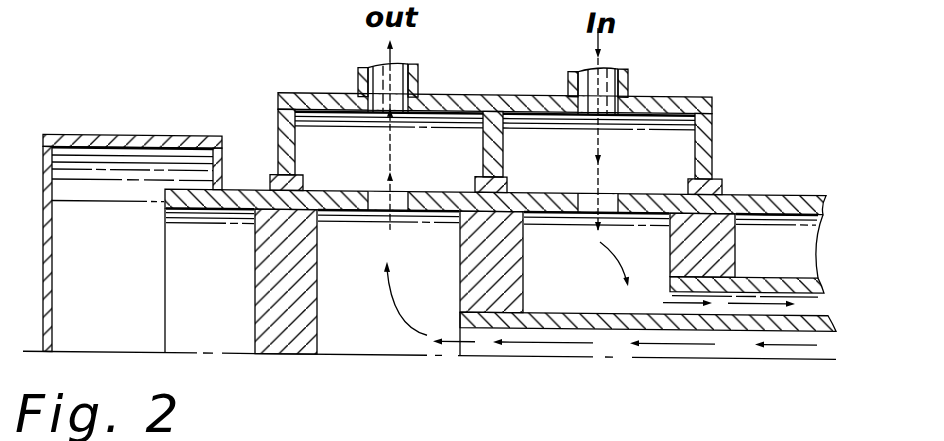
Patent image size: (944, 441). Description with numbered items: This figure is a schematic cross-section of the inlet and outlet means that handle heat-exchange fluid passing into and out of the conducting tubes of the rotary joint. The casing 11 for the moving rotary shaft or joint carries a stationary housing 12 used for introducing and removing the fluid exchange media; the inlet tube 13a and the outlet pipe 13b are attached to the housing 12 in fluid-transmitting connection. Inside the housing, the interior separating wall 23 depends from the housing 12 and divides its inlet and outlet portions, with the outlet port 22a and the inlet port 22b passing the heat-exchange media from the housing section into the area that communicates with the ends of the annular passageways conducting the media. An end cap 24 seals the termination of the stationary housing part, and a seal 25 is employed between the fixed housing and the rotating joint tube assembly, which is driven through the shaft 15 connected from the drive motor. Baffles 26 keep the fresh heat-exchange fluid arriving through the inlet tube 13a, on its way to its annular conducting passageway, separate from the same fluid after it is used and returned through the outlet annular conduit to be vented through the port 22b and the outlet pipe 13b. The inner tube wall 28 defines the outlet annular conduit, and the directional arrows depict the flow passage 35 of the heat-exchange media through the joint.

The casing 11 is at (778, 190).
The stationary housing 12 is at (278, 97).
The inlet tube 13a is at (628, 66).
The outlet pipe 13b is at (418, 72).
The shaft 15 is at (512, 176).
The outlet port 22a is at (612, 175).
The inlet port 22b is at (372, 176).
The interior separating wall 23 is at (498, 137).
The end cap 24 is at (140, 135).
The seal 25 is at (272, 179).
The baffles 26 is at (312, 299).
The inner tube wall 28 is at (533, 311).
The flow passage 35 is at (541, 434).